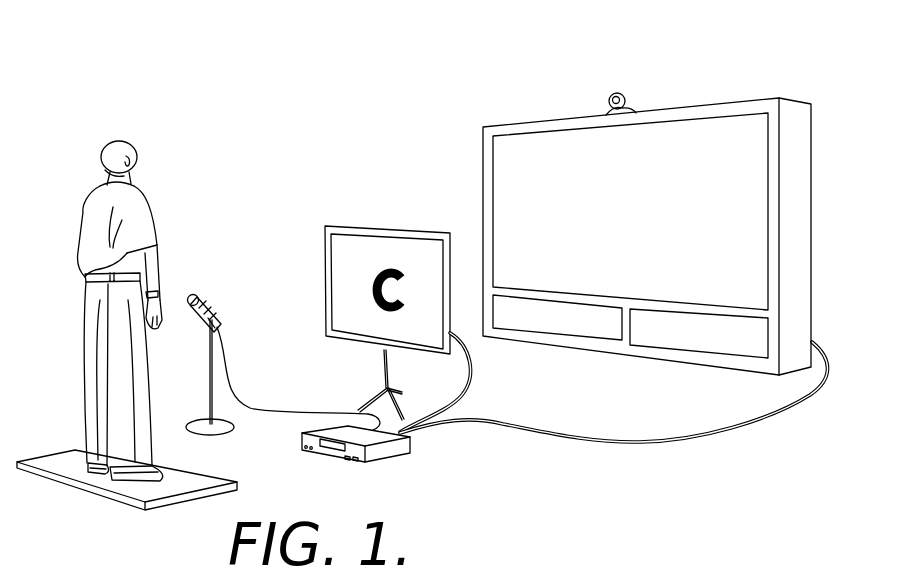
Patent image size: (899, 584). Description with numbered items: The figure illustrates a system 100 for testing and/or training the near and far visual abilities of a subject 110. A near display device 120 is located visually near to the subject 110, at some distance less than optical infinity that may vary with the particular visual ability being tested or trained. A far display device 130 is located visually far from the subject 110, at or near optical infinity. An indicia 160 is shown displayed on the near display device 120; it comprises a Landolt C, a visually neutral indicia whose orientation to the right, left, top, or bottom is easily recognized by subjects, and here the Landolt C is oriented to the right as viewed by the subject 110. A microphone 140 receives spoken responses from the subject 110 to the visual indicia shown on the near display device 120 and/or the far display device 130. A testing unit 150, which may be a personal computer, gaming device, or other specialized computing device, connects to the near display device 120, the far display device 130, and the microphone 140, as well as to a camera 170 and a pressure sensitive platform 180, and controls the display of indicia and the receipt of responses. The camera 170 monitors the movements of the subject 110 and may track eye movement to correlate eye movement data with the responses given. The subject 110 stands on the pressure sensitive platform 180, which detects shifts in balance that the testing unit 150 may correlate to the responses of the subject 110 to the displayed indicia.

The system 100 is at (187, 61).
The subject 110 is at (81, 216).
The near display device 120 is at (378, 229).
The far display device 130 is at (812, 202).
The microphone 140 is at (213, 310).
The testing unit 150 is at (390, 455).
The indicia 160 is at (375, 292).
The camera 170 is at (618, 93).
The pressure sensitive platform 180 is at (217, 482).